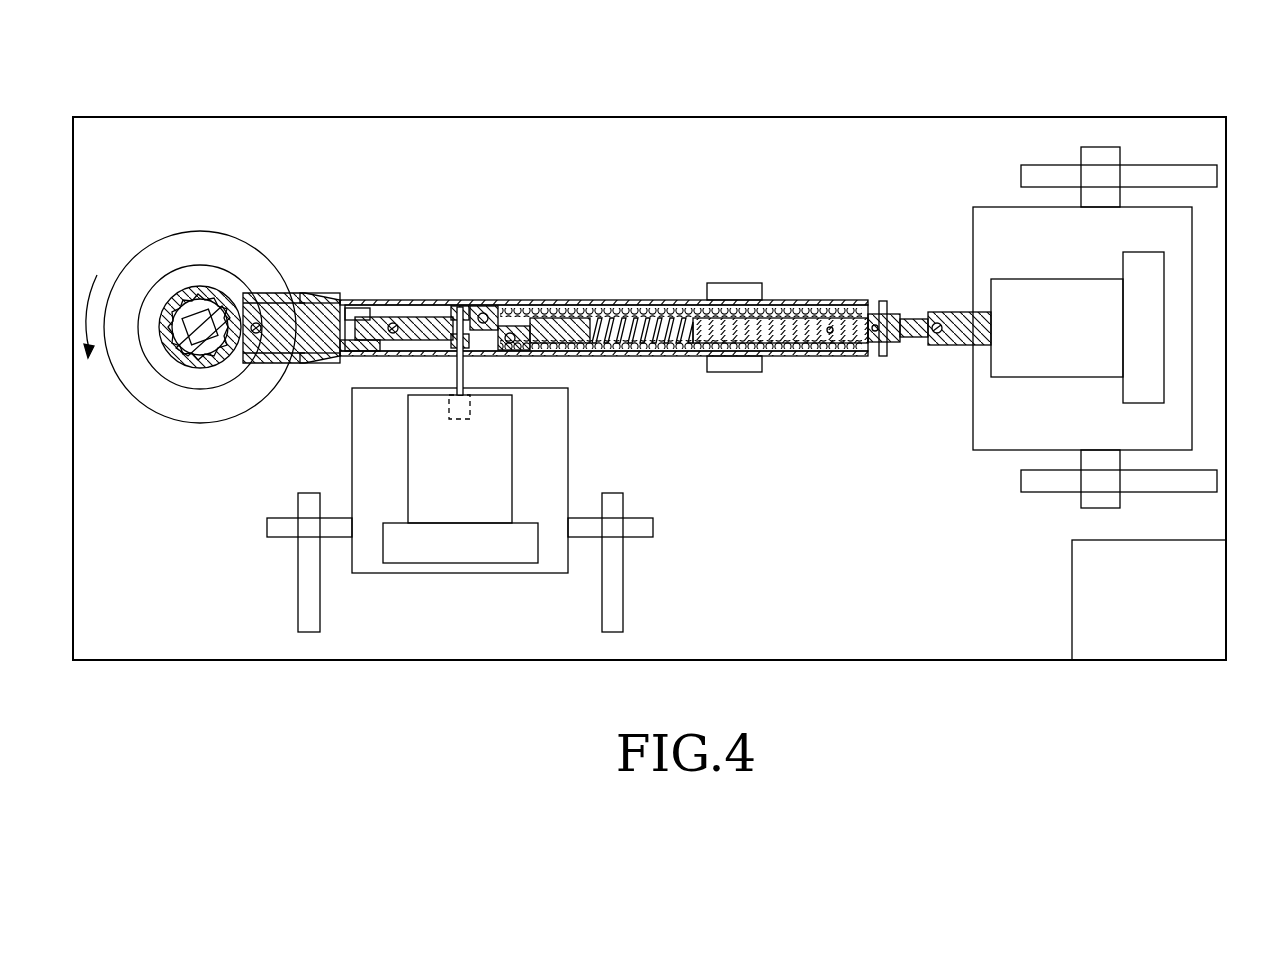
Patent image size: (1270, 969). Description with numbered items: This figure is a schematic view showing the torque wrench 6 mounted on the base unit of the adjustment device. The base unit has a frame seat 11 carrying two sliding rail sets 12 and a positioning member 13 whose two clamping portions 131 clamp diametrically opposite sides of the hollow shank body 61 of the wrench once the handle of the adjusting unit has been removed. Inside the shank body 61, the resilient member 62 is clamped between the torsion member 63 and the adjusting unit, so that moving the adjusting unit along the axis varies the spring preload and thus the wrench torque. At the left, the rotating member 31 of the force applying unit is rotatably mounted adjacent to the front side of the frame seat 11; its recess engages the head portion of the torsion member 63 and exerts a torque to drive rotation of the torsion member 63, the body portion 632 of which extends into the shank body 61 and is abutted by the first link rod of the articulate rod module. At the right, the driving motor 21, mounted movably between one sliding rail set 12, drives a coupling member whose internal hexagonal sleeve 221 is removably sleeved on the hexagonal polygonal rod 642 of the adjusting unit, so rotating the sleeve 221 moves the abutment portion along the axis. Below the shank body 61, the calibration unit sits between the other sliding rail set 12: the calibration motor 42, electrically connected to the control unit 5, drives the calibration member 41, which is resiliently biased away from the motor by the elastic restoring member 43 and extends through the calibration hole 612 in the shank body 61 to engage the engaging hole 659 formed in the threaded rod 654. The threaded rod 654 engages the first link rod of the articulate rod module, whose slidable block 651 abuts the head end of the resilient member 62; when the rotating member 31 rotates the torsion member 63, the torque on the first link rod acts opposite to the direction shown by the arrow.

The frame seat 11 is at (1213, 138).
The sliding rail set 12 is at (1095, 163).
The positioning member 13 is at (738, 373).
The clamping portion 131 is at (740, 290).
The driving motor 21 is at (1087, 333).
The sleeve 221 is at (955, 326).
The rotating member 31 is at (171, 408).
The calibration member 41 is at (465, 368).
The calibration motor 42 is at (478, 508).
The restoring member 43 is at (470, 406).
The control unit 5 is at (1162, 626).
The torque wrench 6 is at (303, 284).
The shank body 61 is at (613, 316).
The calibration hole 612 is at (440, 357).
The resilient member 62 is at (669, 312).
The torsion member 63 is at (192, 292).
The body portion 632 is at (323, 332).
The polygonal rod 642 is at (928, 325).
The slidable block 651 is at (553, 310).
The threaded rod 654 is at (461, 306).
The engaging hole 659 is at (455, 335).